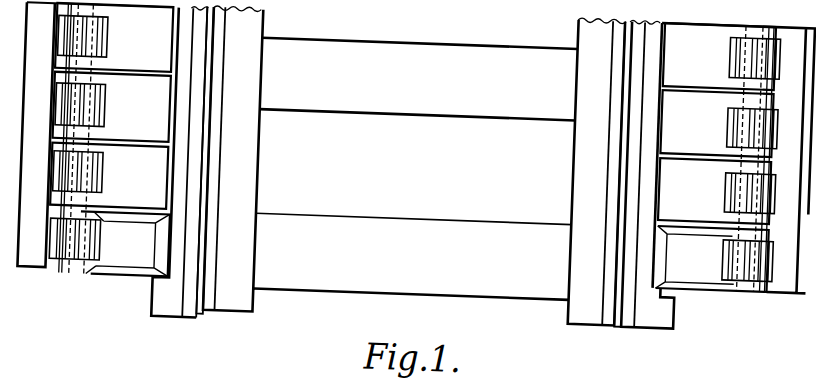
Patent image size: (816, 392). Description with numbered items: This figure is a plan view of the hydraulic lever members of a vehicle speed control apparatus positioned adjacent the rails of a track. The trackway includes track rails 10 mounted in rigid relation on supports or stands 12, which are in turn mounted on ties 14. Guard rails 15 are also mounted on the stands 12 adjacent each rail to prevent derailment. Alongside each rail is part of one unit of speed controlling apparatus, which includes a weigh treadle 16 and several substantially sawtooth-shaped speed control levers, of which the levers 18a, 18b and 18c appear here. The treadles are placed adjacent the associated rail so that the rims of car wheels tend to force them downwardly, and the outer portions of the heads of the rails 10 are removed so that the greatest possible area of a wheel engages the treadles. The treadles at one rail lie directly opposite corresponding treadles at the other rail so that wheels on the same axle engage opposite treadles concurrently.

The track rails 10 is at (177, 312).
The supports or stands 12 is at (206, 324).
The ties 14 is at (408, 228).
The guard rails 15 is at (246, 186).
The weigh treadle 16 is at (138, 266).
The speed control lever 18a is at (146, 200).
The speed control lever 18b is at (141, 136).
The speed control lever 18c is at (142, 62).